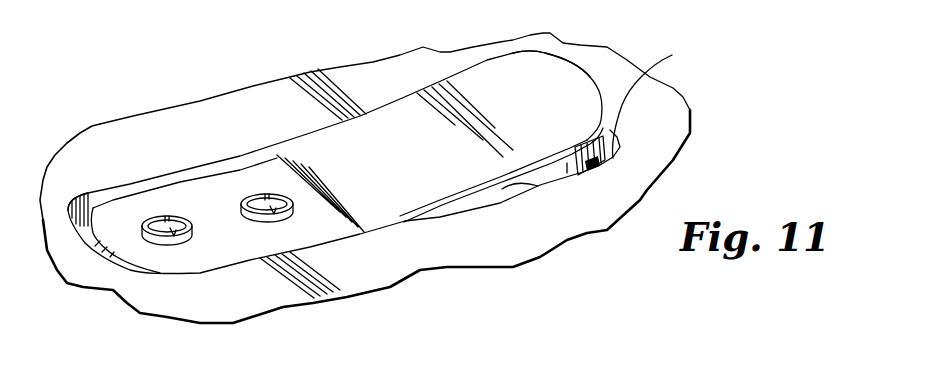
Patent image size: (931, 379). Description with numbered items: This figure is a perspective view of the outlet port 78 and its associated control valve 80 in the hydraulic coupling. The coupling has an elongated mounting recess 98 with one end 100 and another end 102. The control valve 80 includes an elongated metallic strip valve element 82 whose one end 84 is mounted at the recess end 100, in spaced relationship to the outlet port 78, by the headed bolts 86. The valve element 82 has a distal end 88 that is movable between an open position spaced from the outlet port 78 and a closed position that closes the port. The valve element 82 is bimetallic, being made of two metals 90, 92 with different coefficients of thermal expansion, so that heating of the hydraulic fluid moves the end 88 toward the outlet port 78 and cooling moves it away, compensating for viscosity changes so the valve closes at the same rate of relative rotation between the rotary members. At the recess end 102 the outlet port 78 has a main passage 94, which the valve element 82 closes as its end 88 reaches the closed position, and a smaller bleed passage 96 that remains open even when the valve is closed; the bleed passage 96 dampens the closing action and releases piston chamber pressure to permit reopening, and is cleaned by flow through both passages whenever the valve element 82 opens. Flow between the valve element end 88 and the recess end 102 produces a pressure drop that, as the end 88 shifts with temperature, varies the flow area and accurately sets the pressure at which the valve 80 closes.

The outlet port 78 is at (673, 88).
The control valve 80 is at (636, 53).
The strip valve element 82 is at (343, 186).
The one end 84 is at (205, 187).
The headed bolts 86 is at (157, 217).
The distal end 88 is at (564, 60).
The metal 90 is at (462, 190).
The metal 92 is at (497, 190).
The main passage 94 is at (538, 186).
The bleed passage 96 is at (656, 99).
The mounting recess 98 is at (283, 153).
The one end 100 is at (92, 196).
The another end 102 is at (617, 152).